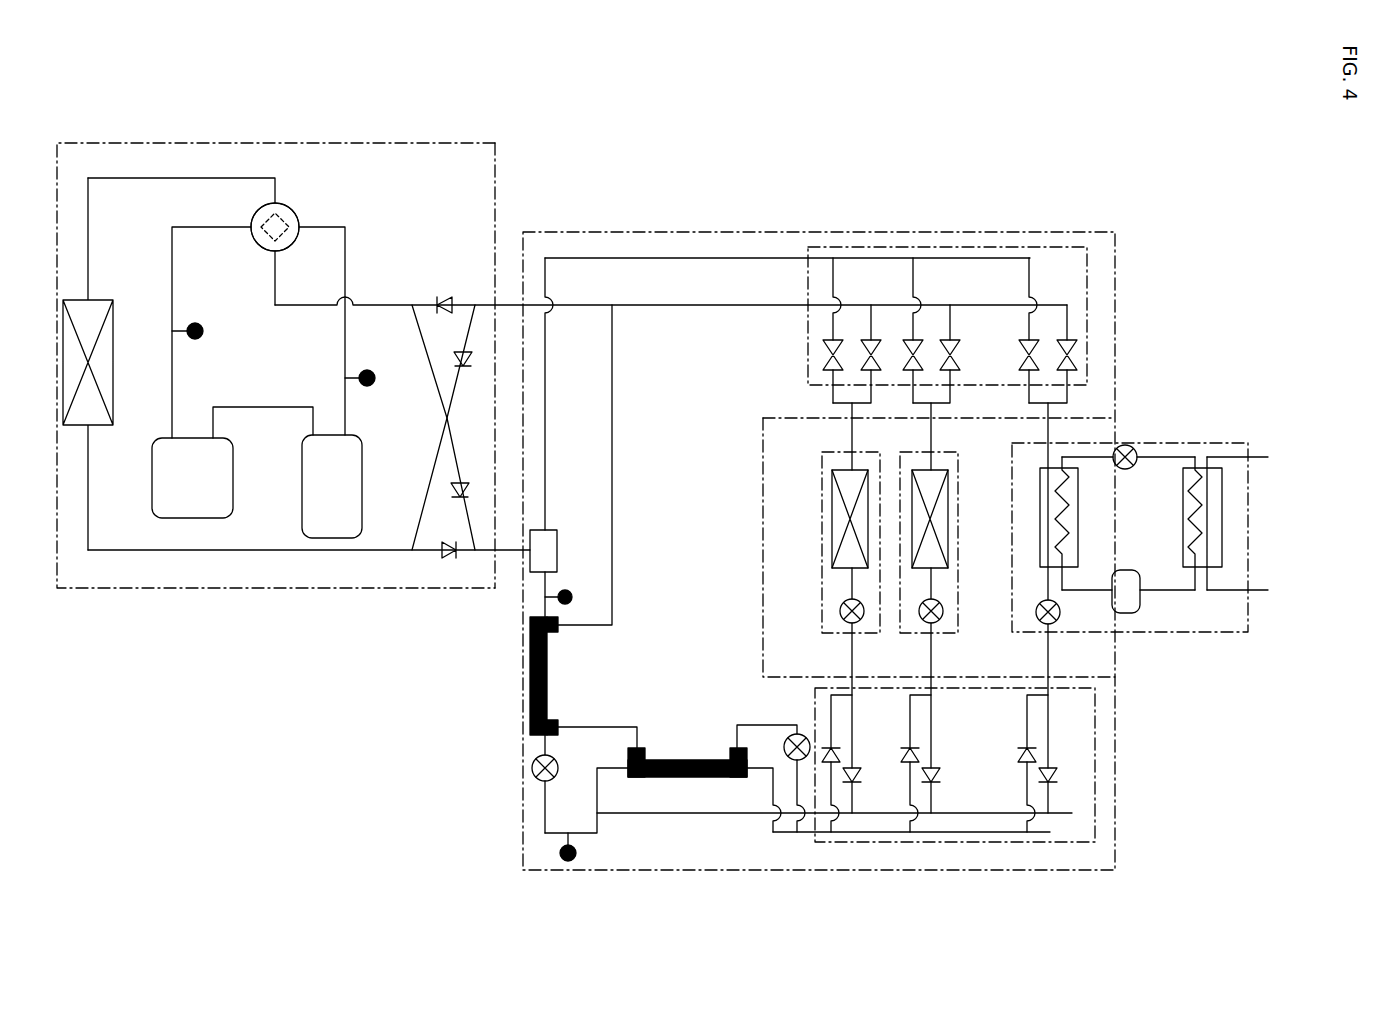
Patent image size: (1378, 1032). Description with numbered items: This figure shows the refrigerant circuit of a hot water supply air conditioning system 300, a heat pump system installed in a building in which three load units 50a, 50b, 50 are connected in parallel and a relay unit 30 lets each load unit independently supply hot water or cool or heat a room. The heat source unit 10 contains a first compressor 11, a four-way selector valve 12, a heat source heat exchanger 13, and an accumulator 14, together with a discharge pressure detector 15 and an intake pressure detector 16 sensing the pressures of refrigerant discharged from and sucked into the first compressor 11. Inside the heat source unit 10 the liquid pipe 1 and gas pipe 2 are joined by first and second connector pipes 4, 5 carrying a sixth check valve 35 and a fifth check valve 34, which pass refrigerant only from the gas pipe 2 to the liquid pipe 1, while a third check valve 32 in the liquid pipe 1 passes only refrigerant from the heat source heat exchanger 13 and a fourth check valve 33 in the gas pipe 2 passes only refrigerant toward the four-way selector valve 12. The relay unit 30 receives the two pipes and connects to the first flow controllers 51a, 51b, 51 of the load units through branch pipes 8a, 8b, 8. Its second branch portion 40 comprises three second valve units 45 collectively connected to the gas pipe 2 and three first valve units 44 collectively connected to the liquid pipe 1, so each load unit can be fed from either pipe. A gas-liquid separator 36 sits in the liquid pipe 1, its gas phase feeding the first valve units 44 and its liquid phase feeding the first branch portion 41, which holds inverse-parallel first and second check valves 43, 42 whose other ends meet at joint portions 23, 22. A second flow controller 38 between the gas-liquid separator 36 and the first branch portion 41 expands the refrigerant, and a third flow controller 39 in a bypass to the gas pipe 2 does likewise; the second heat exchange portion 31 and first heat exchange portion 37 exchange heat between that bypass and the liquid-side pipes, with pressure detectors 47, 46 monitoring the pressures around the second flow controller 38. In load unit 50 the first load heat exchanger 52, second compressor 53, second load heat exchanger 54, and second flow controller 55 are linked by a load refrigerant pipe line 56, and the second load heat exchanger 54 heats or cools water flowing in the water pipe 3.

The liquid pipe 1 is at (496, 557).
The gas pipe 2 is at (512, 304).
The water pipe 3 is at (1235, 443).
The first connector pipe 4 is at (422, 551).
The second connector pipe 5 is at (410, 304).
The branch pipe 8 is at (1052, 653).
The branch pipe 8a is at (855, 645).
The branch pipe 8b is at (929, 667).
The heat source unit 10 is at (497, 200).
The first compressor 11 is at (331, 539).
The four-way selector valve 12 is at (298, 215).
The heat source heat exchanger 13 is at (113, 357).
The accumulator 14 is at (250, 590).
The discharge pressure detector 15 is at (375, 378).
The intake pressure detector 16 is at (203, 331).
The joint portion 22 is at (995, 814).
The joint portion 23 is at (1020, 833).
The relay unit 30 is at (1115, 350).
The second heat exchange portion 31 is at (690, 758).
The third check valve 32 is at (458, 555).
The fourth check valve 33 is at (437, 300).
The fifth check valve 34 is at (452, 490).
The sixth check valve 35 is at (463, 350).
The gas-liquid separator 36 is at (555, 530).
The first heat exchange portion 37 is at (548, 670).
The second flow controller 38 is at (555, 762).
The third flow controller 39 is at (786, 738).
The second branch portion 40 is at (1087, 300).
The first branch portion 41 is at (1095, 808).
The second check valve 42 is at (1034, 752).
The first check valve 43 is at (1068, 786).
The first valve unit 44 is at (1031, 340).
The second valve unit 45 is at (1080, 392).
The pressure detector 46 is at (577, 853).
The pressure detector 47 is at (570, 592).
The load unit 50 is at (1225, 633).
The load unit 50a is at (828, 455).
The load unit 50b is at (906, 455).
The first flow controller 51 is at (1036, 612).
The first flow controller 51a is at (842, 620).
The first flow controller 51b is at (940, 620).
The first load heat exchanger 52 is at (1040, 515).
The second compressor 53 is at (1127, 614).
The second load heat exchanger 54 is at (1183, 515).
The second flow controller 55 is at (1125, 470).
The load refrigerant pipe line 56 is at (1170, 592).
The hot water supply air conditioning system 300 is at (710, 215).